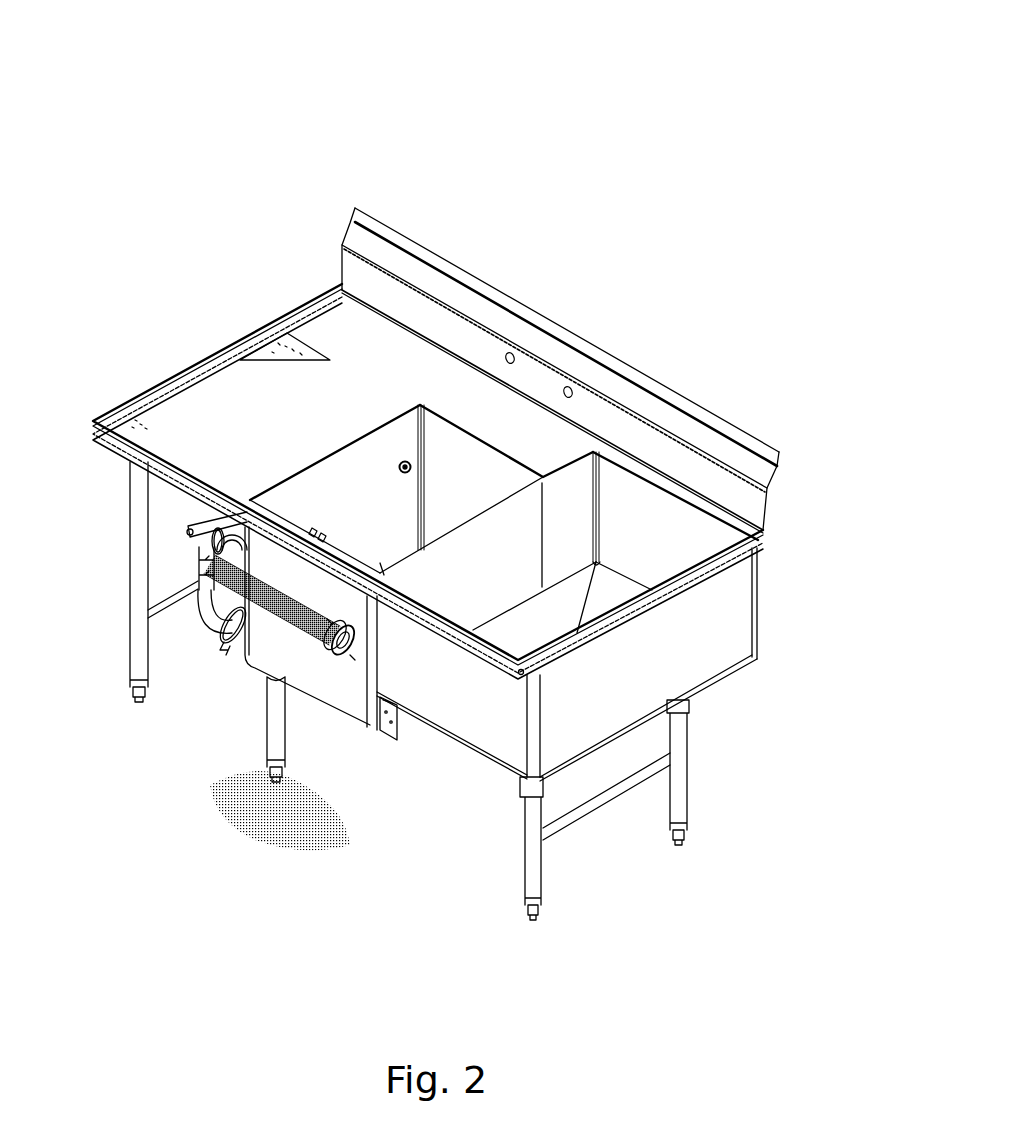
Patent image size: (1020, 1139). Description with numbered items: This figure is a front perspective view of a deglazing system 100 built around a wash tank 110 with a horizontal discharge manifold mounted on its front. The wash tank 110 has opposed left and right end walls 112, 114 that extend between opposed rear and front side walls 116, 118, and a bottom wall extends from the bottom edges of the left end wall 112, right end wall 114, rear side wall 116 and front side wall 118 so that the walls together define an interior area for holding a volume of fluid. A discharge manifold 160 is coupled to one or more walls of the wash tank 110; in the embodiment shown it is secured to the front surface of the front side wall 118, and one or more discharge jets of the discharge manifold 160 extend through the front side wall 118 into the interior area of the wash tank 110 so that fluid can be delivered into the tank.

The deglazing system 100 is at (532, 127).
The wash tank 110 is at (345, 437).
The left end wall 112 is at (315, 483).
The right end wall 114 is at (477, 555).
The rear side wall 116 is at (493, 467).
The front side wall 118 is at (337, 685).
The discharge manifold 160 is at (297, 626).